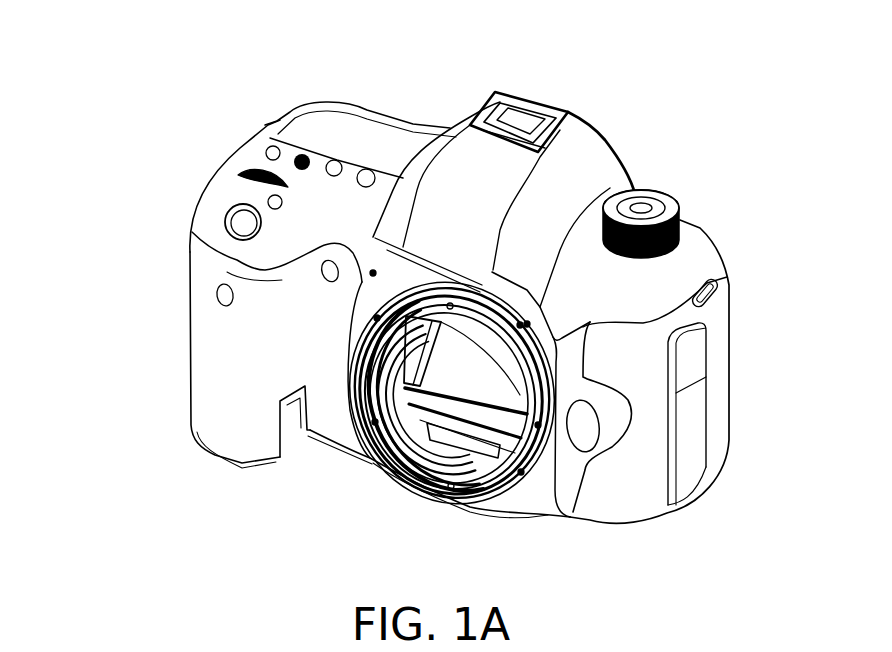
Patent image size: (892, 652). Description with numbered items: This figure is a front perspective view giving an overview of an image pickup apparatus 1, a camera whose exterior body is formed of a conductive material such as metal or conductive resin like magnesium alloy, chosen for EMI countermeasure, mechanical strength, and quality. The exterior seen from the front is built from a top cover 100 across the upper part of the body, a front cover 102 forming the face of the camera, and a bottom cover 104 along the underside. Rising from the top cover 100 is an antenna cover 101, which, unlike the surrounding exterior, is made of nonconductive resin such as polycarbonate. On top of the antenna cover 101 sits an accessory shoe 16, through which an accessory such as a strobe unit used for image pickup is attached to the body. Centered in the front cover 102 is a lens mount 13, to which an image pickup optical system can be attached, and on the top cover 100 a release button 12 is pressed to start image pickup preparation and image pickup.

The image pickup apparatus 1 is at (662, 136).
The release button 12 is at (235, 225).
The lens mount 13 is at (450, 477).
The accessory shoe 16 is at (527, 92).
The top cover 100 is at (237, 150).
The antenna cover 101 is at (461, 173).
The front cover 102 is at (556, 492).
The bottom cover 104 is at (323, 437).